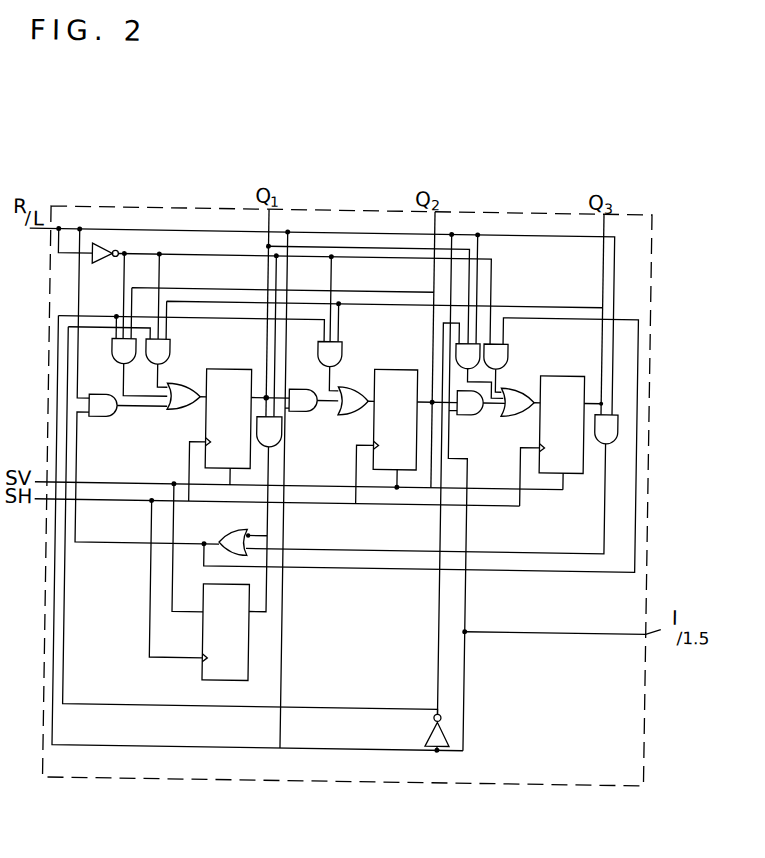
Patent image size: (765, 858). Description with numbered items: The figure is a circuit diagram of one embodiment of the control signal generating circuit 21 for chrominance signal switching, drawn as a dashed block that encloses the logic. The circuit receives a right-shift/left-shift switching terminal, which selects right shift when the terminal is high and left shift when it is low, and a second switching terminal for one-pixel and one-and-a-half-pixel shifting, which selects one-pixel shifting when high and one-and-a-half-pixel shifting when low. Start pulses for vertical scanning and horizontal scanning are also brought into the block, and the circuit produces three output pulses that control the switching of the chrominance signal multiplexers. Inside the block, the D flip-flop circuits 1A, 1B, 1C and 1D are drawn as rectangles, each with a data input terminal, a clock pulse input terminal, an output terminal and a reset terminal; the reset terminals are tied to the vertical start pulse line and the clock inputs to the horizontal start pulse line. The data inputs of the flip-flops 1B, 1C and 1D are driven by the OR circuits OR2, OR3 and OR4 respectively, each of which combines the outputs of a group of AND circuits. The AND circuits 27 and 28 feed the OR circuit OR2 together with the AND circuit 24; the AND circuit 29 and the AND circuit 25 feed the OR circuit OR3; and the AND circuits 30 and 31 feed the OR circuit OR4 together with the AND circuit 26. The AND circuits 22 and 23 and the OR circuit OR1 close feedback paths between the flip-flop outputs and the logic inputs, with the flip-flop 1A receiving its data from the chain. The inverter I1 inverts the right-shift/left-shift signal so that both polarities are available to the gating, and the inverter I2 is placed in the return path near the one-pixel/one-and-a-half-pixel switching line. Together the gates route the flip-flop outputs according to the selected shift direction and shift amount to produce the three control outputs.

The control signal generating circuit 21 is at (631, 767).
The AND circuit 22 is at (291, 436).
The AND circuit 23 is at (617, 427).
The AND circuit 24 is at (103, 422).
The AND circuit 25 is at (306, 390).
The AND circuit 26 is at (474, 413).
The AND circuit 27 is at (107, 356).
The AND circuit 28 is at (160, 341).
The AND circuit 29 is at (339, 342).
The AND circuit 30 is at (457, 342).
The AND circuit 31 is at (494, 342).
The inverter I1 is at (92, 246).
The inverter I2 is at (447, 728).
The OR circuit OR1 is at (244, 530).
The OR circuit OR2 is at (191, 375).
The OR circuit OR3 is at (349, 387).
The OR circuit OR4 is at (516, 380).
The D flip-flop circuit 1A is at (253, 654).
The D flip-flop circuit 1B is at (243, 371).
The D flip-flop circuit 1C is at (401, 369).
The D flip-flop circuit 1D is at (562, 373).